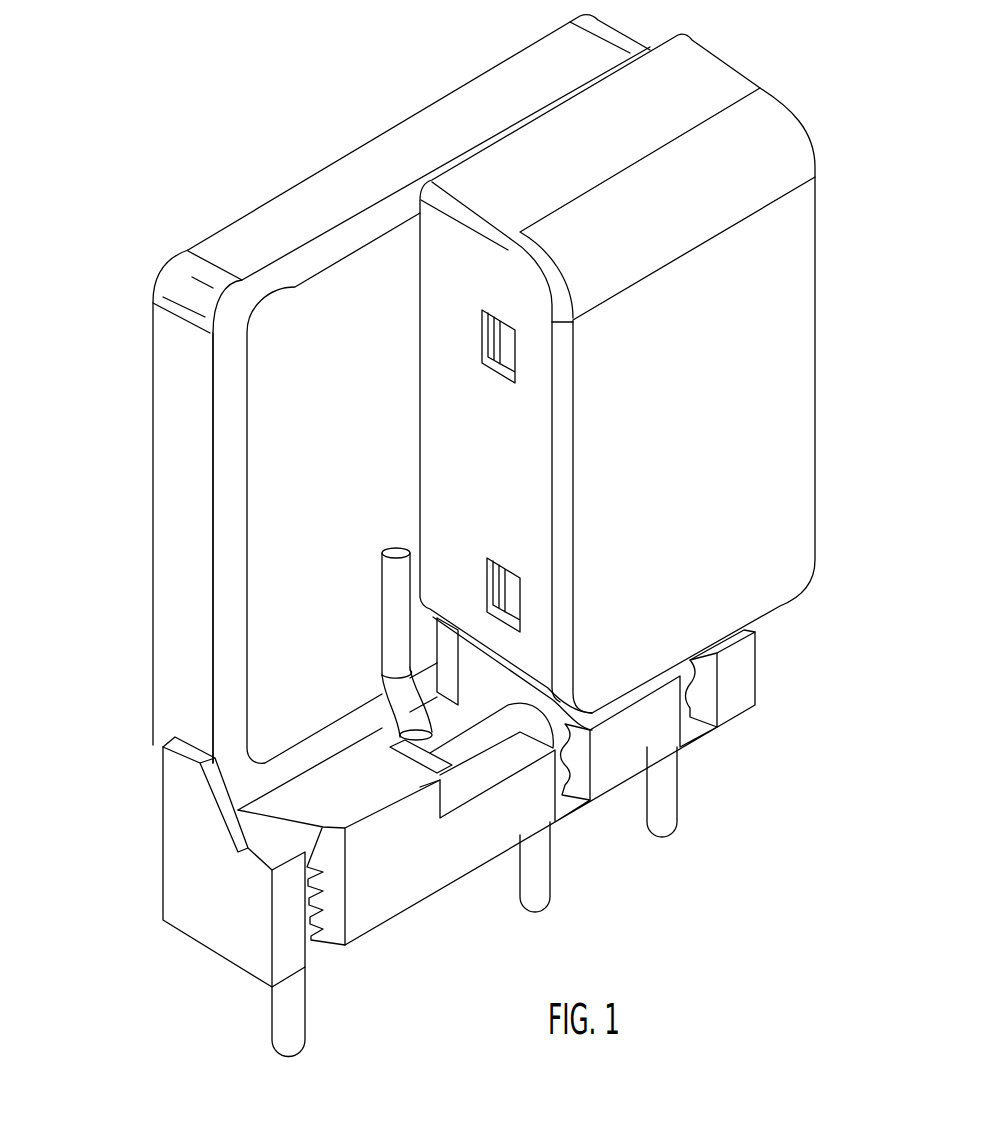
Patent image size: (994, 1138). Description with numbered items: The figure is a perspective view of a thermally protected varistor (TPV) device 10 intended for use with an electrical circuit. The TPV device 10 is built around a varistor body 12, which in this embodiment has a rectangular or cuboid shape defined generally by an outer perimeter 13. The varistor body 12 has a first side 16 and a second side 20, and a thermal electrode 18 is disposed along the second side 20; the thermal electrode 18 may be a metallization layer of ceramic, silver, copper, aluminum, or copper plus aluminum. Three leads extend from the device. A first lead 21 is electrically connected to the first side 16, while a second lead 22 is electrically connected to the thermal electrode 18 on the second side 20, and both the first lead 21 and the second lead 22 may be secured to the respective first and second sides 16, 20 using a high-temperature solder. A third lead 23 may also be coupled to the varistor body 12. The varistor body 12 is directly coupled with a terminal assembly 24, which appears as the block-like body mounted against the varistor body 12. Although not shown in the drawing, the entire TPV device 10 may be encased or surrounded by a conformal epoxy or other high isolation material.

The TPV device 10 is at (218, 93).
The varistor body 12 is at (142, 518).
The outer perimeter 13 is at (428, 130).
The first side 16 is at (152, 358).
The thermal electrode 18 is at (324, 381).
The second side 20 is at (235, 595).
The first lead 21 is at (287, 1040).
The second lead 22 is at (538, 895).
The third lead 23 is at (665, 815).
The terminal assembly 24 is at (838, 278).